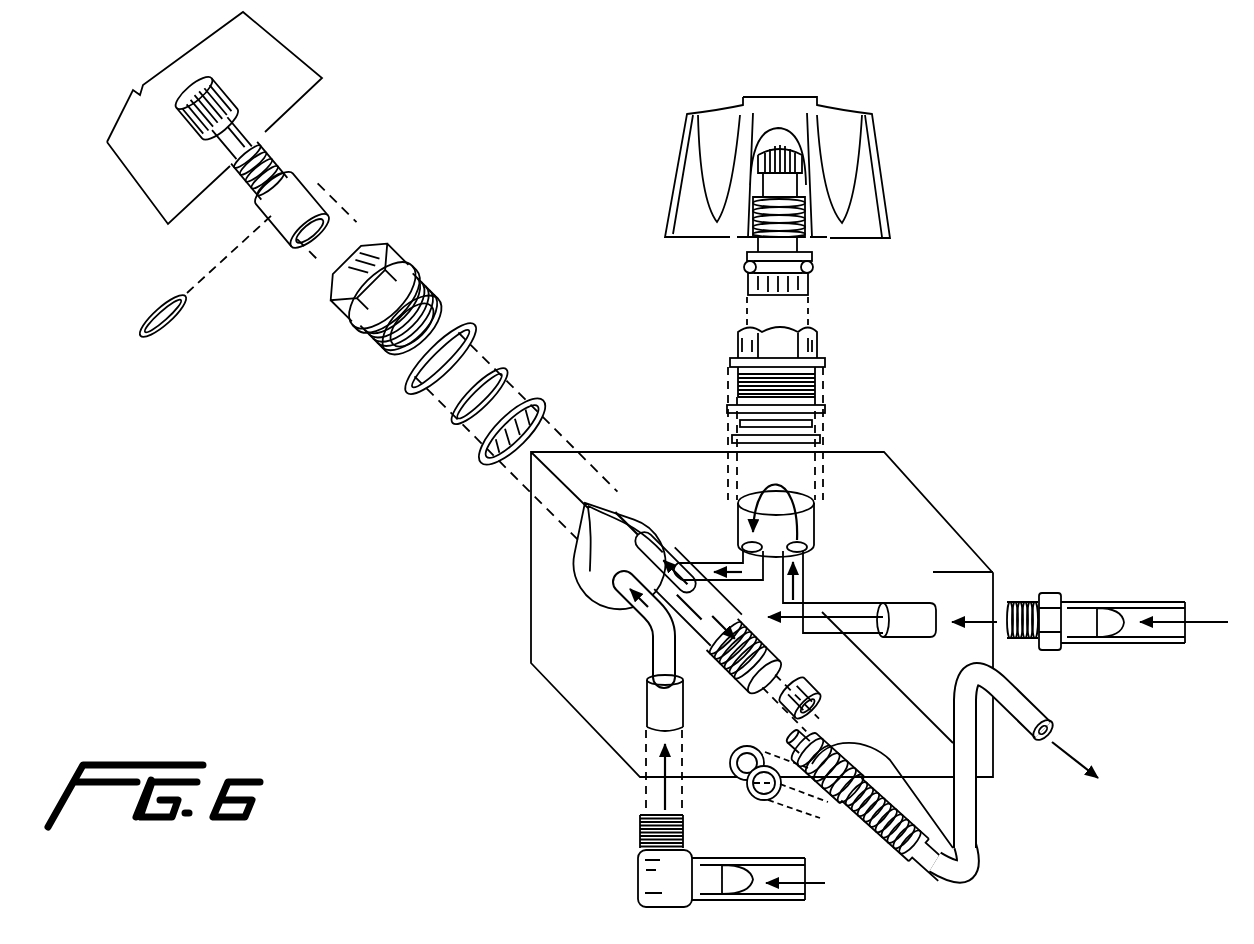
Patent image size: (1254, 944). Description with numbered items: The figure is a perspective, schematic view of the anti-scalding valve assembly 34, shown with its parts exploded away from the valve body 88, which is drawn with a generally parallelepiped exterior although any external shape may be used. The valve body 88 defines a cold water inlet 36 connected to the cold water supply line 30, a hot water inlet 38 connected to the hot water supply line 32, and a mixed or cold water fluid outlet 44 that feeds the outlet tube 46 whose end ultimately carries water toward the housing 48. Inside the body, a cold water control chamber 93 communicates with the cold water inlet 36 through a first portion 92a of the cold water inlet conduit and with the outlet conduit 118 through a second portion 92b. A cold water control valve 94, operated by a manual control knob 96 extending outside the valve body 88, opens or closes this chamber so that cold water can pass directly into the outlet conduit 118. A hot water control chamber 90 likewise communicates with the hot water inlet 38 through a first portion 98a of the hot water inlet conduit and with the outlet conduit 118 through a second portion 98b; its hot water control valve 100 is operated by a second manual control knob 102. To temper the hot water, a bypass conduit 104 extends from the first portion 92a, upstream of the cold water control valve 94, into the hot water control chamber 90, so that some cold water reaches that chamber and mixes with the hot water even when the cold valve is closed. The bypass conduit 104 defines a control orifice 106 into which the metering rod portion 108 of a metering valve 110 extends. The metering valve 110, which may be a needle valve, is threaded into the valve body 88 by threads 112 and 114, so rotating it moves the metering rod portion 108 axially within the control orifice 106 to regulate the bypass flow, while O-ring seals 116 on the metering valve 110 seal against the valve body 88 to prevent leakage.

The hot water supply line 30 is at (1170, 642).
The cold water supply line 32 is at (790, 902).
The anti-scalding valve assembly 34 is at (405, 650).
The cold water inlet 36 is at (932, 612).
The hot water inlet 38 is at (650, 708).
The fluid outlet 44 is at (805, 703).
The outlet tube 46 is at (978, 875).
The housing 48 is at (1089, 775).
The valve body 88 is at (912, 485).
The hot water control chamber 90 is at (580, 568).
The first portion of cold water inlet conduit 92a is at (880, 580).
The second portion of cold water inlet conduit 92b is at (672, 582).
The cold water control chamber 93 is at (838, 470).
The cold water control valve 94 is at (830, 364).
The manual control knob 96 is at (886, 193).
The first portion of hot water inlet conduit 98a is at (595, 640).
The second portion of hot water inlet conduit 98b is at (590, 605).
The hot water control valve 100 is at (388, 240).
The manual control knob 102 is at (290, 88).
The bypass conduit 104 is at (612, 585).
The control orifice 106 is at (642, 647).
The metering rod portion 108 is at (988, 828).
The metering valve 110 is at (828, 807).
The threads 112 is at (878, 858).
The threads 114 is at (737, 670).
The O-ring seals 116 is at (748, 800).
The outlet conduit 118 is at (703, 585).